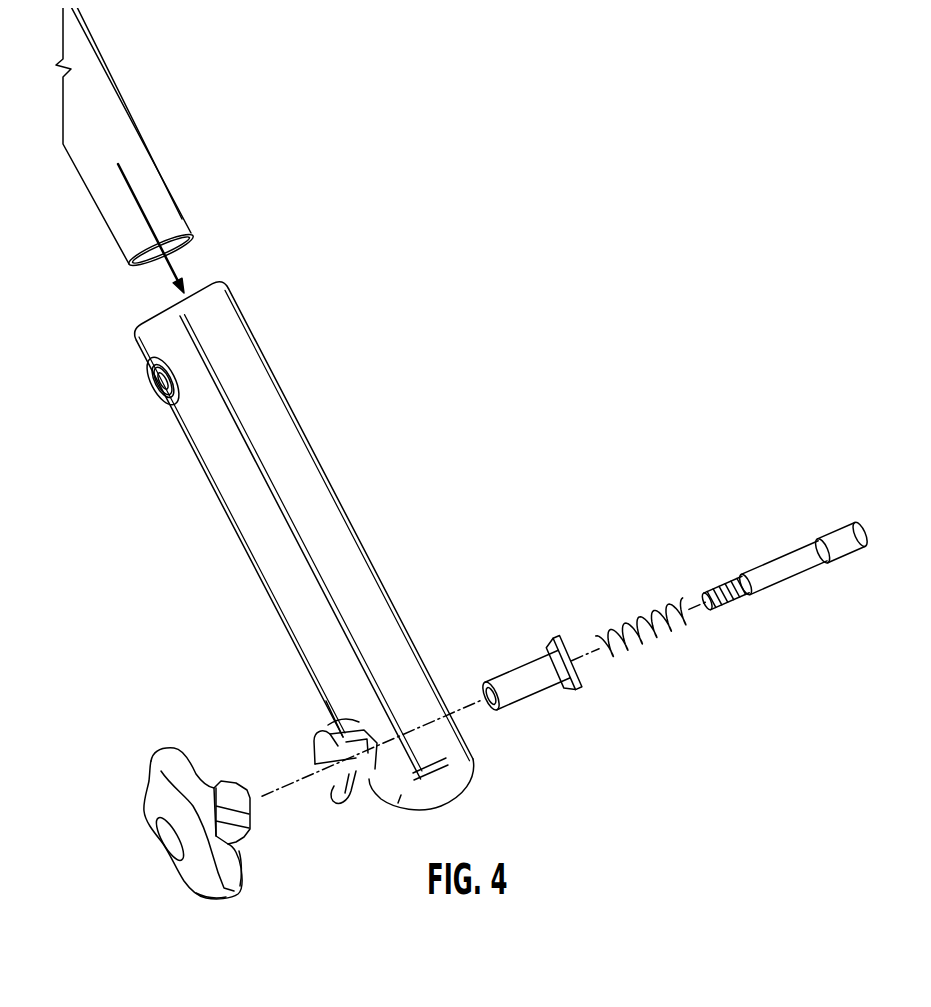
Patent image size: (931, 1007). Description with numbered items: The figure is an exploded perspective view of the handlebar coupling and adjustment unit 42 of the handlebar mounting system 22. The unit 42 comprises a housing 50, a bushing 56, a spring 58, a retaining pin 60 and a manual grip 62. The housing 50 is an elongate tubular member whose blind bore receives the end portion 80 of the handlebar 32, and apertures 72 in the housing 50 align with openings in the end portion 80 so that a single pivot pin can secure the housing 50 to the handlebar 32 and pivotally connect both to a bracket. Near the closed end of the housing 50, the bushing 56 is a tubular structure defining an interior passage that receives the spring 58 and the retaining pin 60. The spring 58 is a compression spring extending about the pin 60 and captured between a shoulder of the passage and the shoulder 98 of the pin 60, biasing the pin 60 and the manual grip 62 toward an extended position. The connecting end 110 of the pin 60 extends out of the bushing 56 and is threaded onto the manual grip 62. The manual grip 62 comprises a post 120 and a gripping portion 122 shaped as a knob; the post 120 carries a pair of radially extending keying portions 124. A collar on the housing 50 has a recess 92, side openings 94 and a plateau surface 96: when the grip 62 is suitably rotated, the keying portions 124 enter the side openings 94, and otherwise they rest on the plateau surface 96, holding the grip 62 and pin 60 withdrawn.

The shaft lock assembly 22 is at (390, 543).
The handlebar 32 is at (152, 139).
The end portion 80 is at (178, 216).
The handlebar coupling and adjustment unit 42 is at (296, 573).
The housing 50 is at (377, 565).
The apertures 72 is at (153, 396).
The bushing 56 is at (527, 660).
The spring 58 is at (645, 617).
The retaining pin 60 is at (785, 539).
The connecting end 110 is at (725, 582).
The shoulder 98 is at (813, 538).
The manual grip 62 is at (230, 812).
The keying portions 124 is at (238, 799).
The post 120 is at (240, 843).
The gripping portion 122 is at (197, 895).
The recess 92 is at (322, 747).
The side openings 94 is at (320, 733).
The plateau surface 96 is at (343, 790).